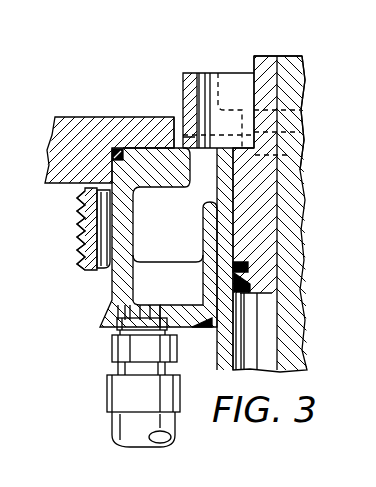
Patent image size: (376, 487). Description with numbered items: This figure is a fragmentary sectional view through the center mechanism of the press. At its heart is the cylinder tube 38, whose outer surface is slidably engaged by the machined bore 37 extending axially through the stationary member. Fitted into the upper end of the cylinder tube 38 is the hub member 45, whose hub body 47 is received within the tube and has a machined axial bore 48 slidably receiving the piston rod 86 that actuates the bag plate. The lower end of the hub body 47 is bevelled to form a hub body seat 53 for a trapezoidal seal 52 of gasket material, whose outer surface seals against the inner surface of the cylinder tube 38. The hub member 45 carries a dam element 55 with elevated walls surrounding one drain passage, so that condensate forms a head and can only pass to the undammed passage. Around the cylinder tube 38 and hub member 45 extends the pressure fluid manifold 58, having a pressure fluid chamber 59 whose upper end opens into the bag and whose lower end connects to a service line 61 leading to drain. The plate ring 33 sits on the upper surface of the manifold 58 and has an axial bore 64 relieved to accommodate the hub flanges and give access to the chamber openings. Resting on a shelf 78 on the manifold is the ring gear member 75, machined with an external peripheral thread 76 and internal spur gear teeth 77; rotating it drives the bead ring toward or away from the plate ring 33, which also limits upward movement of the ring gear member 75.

The plate ring 33 is at (82, 122).
The dam element 55 is at (210, 82).
The axial bore 64 is at (177, 118).
The hub member 45 is at (266, 60).
The piston rod 86 is at (297, 130).
The axial bore 48 is at (265, 173).
The hub body 47 is at (263, 213).
The pressure fluid manifold 58 is at (140, 172).
The internal spur gear teeth 77 is at (100, 205).
The pressure fluid chamber 59 is at (152, 220).
The peripheral thread 76 is at (80, 252).
The ring gear member 75 is at (85, 272).
The shelf 78 is at (100, 288).
The trapezoidal seal 52 is at (246, 270).
The hub body seat 53 is at (258, 282).
The cylinder tube 38 is at (228, 350).
The machined bore 37 is at (215, 342).
The service line 61 is at (120, 392).